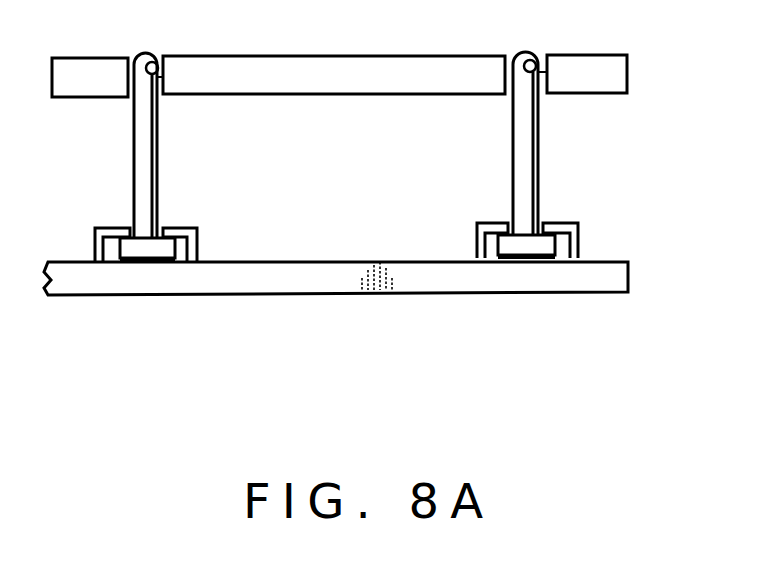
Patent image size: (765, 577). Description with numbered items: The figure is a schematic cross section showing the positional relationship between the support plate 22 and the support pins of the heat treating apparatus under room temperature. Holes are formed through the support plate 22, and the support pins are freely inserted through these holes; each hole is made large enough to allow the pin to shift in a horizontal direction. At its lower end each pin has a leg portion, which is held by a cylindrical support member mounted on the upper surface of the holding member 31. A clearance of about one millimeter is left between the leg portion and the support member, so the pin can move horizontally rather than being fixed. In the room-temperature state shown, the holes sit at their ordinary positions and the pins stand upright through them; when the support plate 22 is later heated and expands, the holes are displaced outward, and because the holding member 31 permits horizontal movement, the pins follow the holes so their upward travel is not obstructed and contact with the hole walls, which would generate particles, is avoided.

The support plate 22 is at (290, 73).
The holding member 31 is at (345, 281).